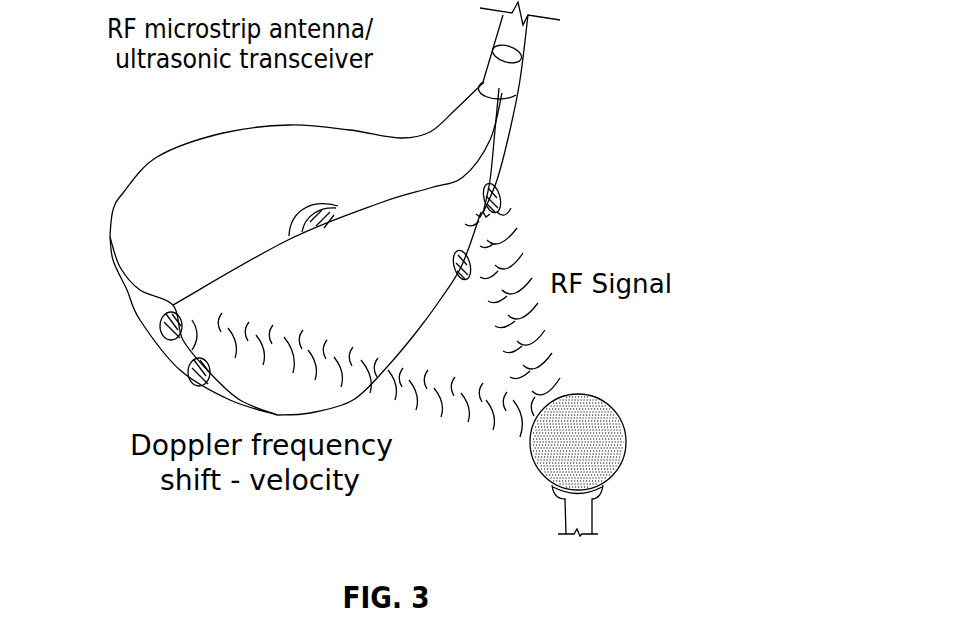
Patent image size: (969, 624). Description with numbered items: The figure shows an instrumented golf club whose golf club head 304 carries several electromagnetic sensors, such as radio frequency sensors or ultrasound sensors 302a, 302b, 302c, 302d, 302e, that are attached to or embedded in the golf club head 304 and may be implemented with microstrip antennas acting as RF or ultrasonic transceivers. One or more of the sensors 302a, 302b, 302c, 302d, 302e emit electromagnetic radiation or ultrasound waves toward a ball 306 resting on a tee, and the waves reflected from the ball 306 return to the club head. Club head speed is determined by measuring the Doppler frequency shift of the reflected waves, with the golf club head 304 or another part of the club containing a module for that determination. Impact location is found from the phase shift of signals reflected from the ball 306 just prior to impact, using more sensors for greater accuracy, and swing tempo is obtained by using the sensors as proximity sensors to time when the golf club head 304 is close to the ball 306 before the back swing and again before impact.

The golf club head 304 is at (170, 183).
The sensor 302a is at (151, 330).
The sensor 302b is at (183, 380).
The sensor 302c is at (311, 196).
The sensor 302d is at (500, 187).
The sensor 302e is at (446, 263).
The ball 306 is at (523, 460).